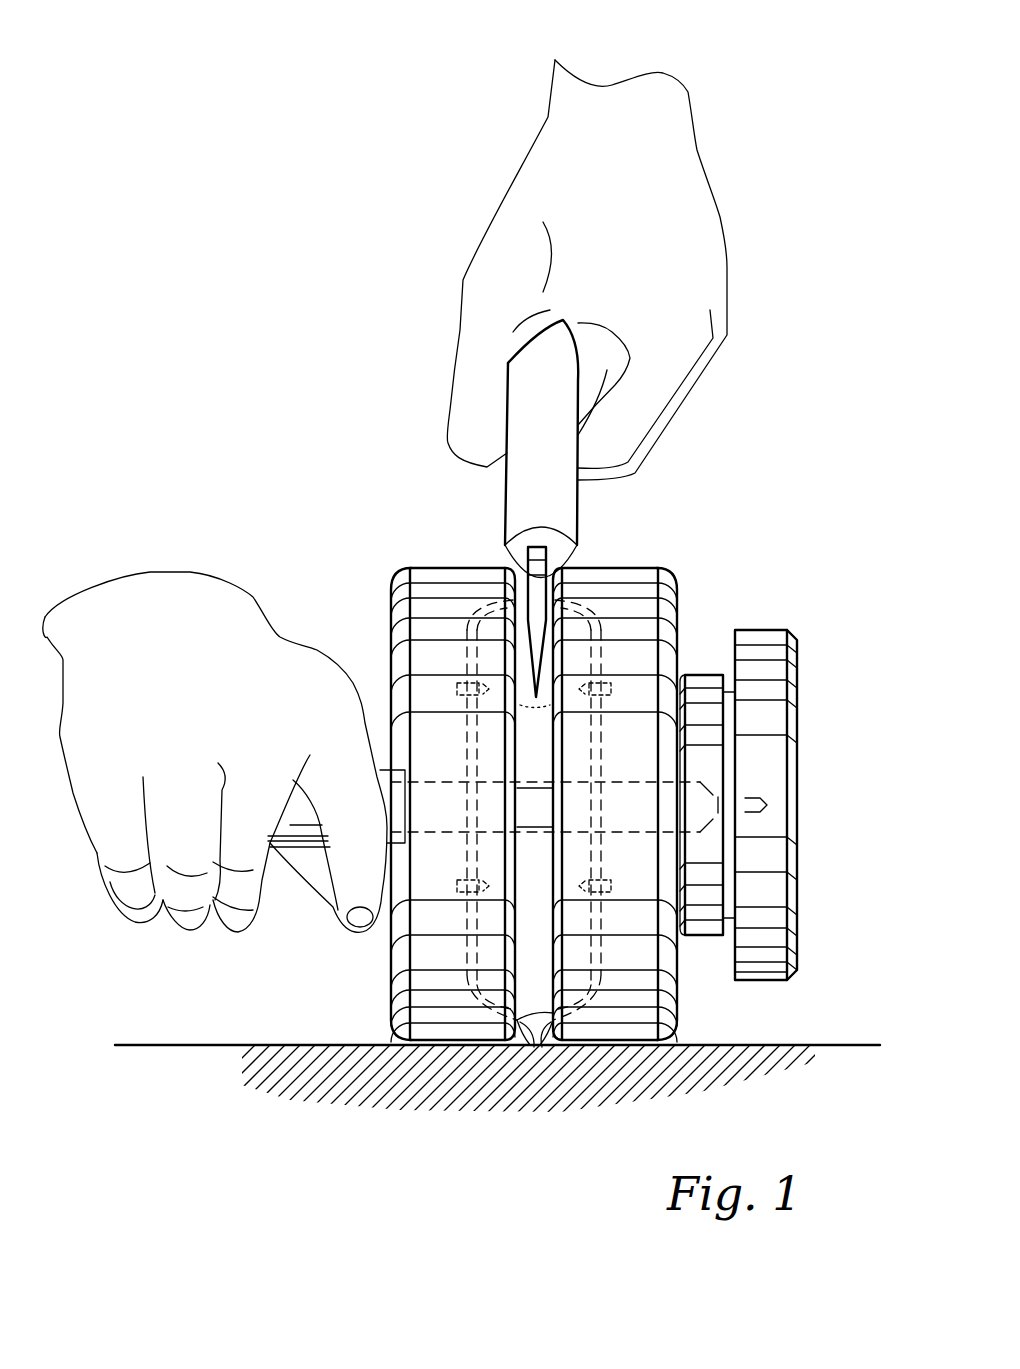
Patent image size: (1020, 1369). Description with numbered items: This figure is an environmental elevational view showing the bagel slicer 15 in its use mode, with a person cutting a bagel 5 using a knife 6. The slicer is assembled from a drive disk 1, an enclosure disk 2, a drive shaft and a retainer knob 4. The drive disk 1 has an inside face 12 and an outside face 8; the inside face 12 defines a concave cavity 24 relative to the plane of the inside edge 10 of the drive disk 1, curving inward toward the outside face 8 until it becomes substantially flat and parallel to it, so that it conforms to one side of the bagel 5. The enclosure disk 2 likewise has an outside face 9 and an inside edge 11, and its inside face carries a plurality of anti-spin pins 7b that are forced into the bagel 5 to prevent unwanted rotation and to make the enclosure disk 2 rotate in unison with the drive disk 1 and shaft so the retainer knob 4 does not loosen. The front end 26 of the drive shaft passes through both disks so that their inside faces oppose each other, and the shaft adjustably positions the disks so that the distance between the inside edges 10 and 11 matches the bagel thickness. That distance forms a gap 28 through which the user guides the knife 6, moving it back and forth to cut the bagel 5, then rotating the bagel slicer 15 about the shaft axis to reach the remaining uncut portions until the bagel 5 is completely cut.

The drive disk 1 is at (433, 567).
The enclosure disk 2 is at (590, 570).
The retainer knob 4 is at (798, 678).
The bagel 5 is at (543, 942).
The knife 6 is at (580, 503).
The anti-spin pins 7b is at (613, 890).
The outside face 8 is at (463, 658).
The outside face 9 is at (678, 620).
The inside edge 10 is at (524, 1024).
The inside edge 11 is at (547, 1028).
The inside face 12 is at (368, 610).
The bagel slicer 15 is at (678, 542).
The concave cavity 24 is at (490, 610).
The front end 26 is at (763, 800).
The gap 28 is at (527, 1093).